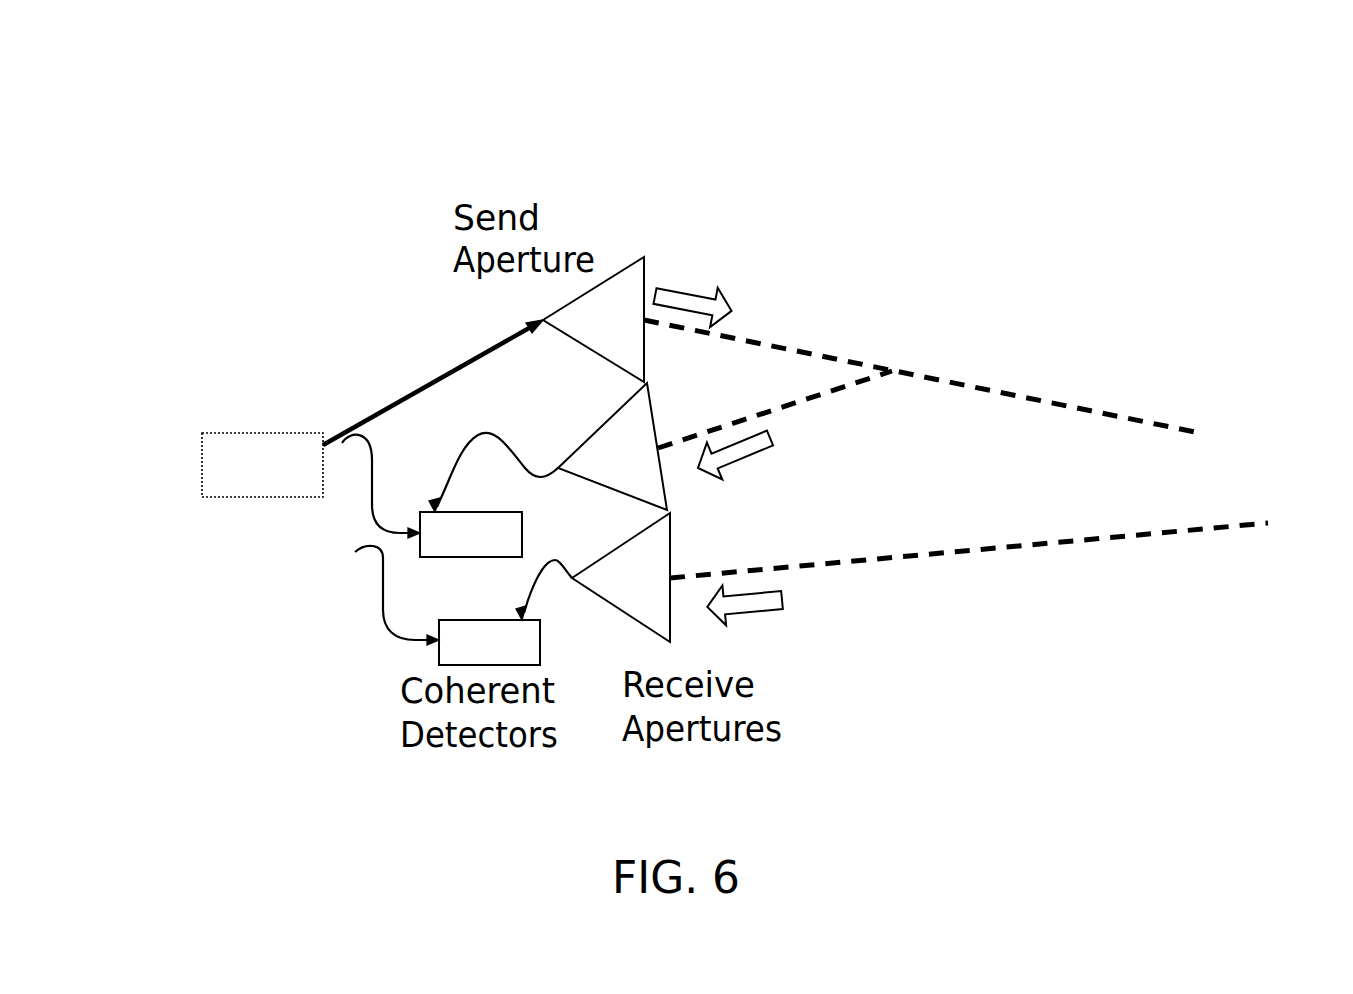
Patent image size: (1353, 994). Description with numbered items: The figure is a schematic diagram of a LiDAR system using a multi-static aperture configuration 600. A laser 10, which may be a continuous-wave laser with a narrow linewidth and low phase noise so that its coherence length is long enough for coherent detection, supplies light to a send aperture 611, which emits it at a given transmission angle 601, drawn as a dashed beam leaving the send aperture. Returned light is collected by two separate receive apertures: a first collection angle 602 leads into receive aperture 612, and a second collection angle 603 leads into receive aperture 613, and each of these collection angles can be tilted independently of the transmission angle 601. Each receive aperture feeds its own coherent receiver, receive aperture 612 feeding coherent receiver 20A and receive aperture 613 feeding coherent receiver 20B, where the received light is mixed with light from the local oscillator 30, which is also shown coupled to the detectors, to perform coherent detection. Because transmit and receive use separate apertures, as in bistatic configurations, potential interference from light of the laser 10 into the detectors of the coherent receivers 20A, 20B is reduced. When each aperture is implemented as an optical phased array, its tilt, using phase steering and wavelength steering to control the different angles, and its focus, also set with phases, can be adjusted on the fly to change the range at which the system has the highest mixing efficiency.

The multi-static aperture configuration 600 is at (360, 167).
The laser 10 is at (260, 432).
The coherent receiver 20A is at (450, 547).
The coherent receiver 20B is at (470, 661).
The local oscillator (LO) 30 is at (381, 596).
The send aperture 611 is at (590, 329).
The receive aperture 612 is at (600, 474).
The receive aperture 613 is at (616, 591).
The transmission angle 601 is at (1000, 374).
The first collection angle 602 is at (830, 408).
The second collection angle 603 is at (1082, 558).